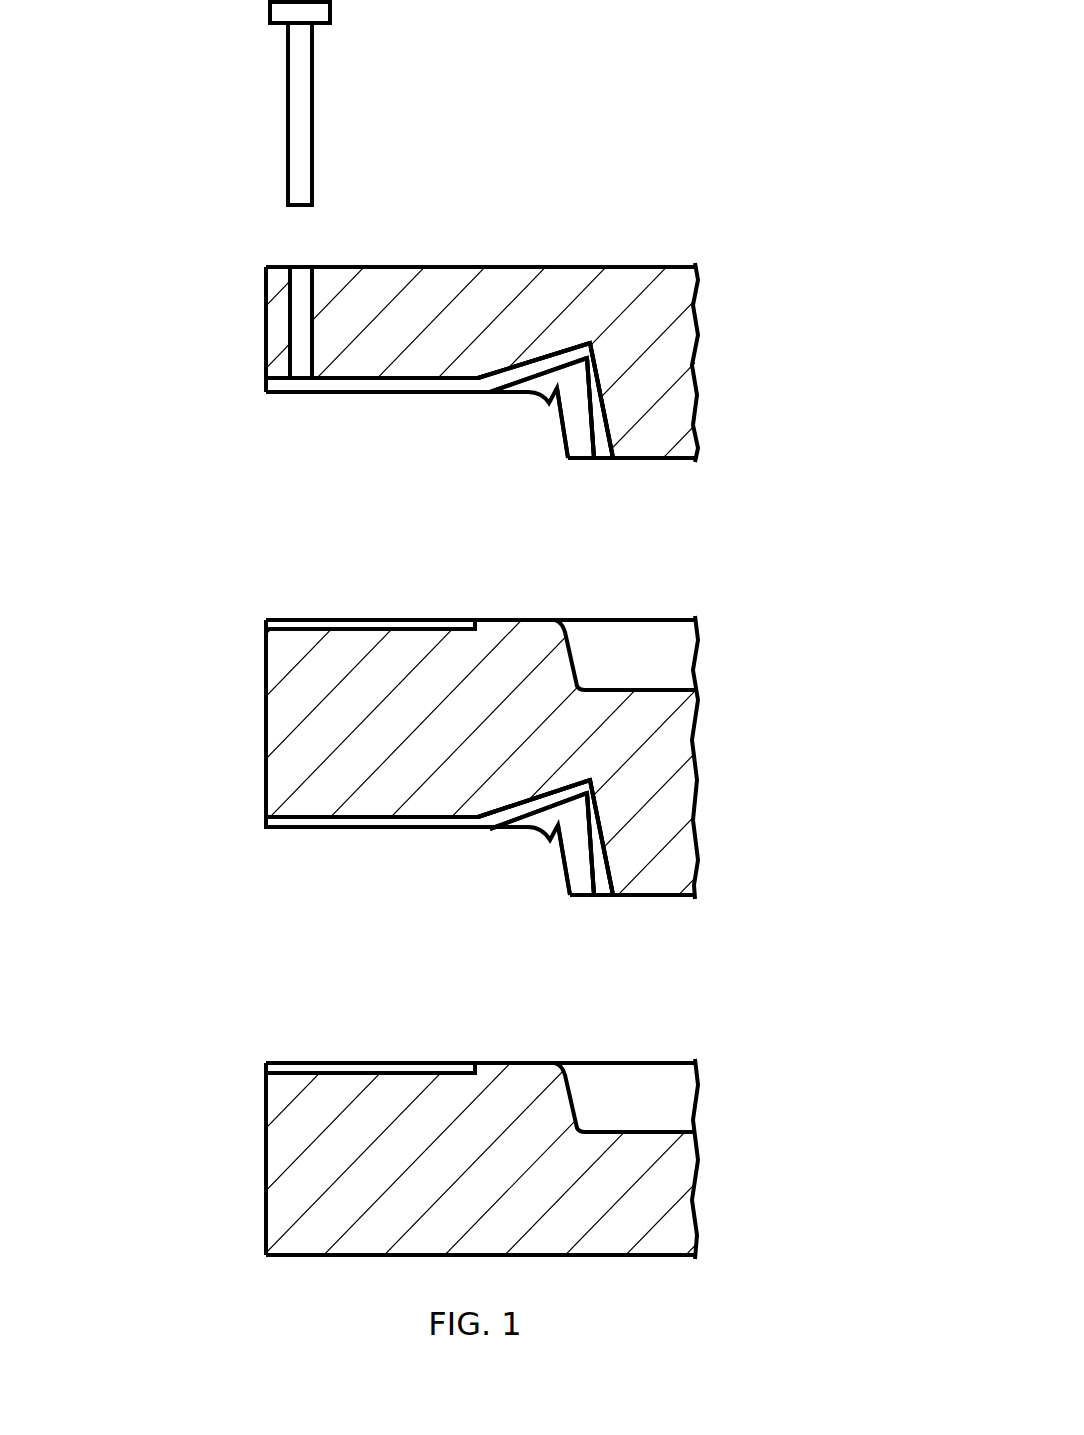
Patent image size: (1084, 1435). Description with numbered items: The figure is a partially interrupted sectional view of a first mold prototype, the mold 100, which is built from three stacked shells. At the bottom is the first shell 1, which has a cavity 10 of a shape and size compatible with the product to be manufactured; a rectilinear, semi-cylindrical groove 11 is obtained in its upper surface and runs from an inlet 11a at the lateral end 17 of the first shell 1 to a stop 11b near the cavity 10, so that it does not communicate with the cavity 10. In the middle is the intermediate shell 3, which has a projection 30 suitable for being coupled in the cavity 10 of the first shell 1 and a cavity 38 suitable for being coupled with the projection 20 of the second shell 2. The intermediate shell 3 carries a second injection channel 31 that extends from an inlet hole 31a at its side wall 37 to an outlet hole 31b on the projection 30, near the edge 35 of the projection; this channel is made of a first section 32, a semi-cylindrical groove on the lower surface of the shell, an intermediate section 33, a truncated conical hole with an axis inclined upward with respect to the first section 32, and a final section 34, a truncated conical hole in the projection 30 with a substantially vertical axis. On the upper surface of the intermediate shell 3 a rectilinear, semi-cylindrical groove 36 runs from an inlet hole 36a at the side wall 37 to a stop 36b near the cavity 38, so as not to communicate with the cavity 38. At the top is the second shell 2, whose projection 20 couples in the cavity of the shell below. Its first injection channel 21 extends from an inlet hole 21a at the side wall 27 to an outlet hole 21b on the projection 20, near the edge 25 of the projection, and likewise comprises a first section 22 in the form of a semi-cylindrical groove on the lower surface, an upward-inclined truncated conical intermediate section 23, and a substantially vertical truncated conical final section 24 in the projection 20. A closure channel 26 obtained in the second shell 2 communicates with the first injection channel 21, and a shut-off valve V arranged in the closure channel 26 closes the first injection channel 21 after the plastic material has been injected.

The mold 100 is at (772, 140).
The shut-off valve V is at (300, 82).
The second shell 2 is at (467, 297).
The closure channel 26 is at (345, 300).
The intermediate section 23 is at (545, 368).
The final section 24 is at (602, 412).
The side wall 27 is at (265, 314).
The injection channel 21 is at (354, 412).
The inlet hole 21a is at (266, 386).
The first section 22 is at (414, 393).
The edge 25 is at (563, 442).
The outlet hole 21b is at (602, 463).
The projection 20 is at (665, 453).
The intermediate shell 3 is at (282, 720).
The groove 36 is at (334, 618).
The inlet hole 36a is at (265, 627).
The stop 36b is at (470, 622).
The cavity 38 is at (660, 640).
The side wall 37 is at (263, 780).
The injection channel 31 is at (386, 846).
The inlet hole 31a is at (263, 823).
The first section 32 is at (313, 830).
The intermediate section 33 is at (510, 795).
The edge 35 is at (563, 877).
The outlet hole 31b is at (598, 897).
The final section 34 is at (608, 862).
The projection 30 is at (687, 898).
The first shell 1 is at (287, 1210).
The groove 11 is at (357, 1063).
The inlet 11a is at (265, 1070).
The stop 11b is at (455, 1062).
The lateral end 17 is at (263, 1155).
The cavity 10 is at (675, 1105).